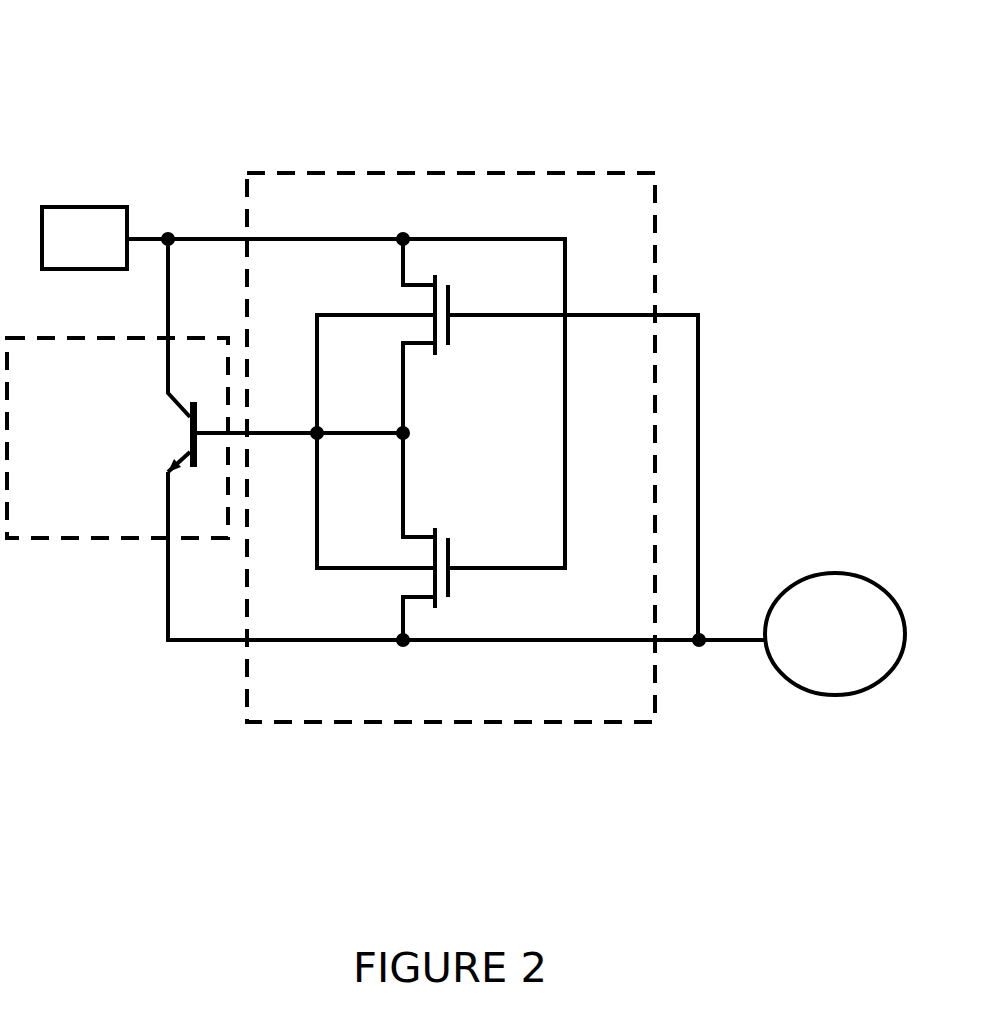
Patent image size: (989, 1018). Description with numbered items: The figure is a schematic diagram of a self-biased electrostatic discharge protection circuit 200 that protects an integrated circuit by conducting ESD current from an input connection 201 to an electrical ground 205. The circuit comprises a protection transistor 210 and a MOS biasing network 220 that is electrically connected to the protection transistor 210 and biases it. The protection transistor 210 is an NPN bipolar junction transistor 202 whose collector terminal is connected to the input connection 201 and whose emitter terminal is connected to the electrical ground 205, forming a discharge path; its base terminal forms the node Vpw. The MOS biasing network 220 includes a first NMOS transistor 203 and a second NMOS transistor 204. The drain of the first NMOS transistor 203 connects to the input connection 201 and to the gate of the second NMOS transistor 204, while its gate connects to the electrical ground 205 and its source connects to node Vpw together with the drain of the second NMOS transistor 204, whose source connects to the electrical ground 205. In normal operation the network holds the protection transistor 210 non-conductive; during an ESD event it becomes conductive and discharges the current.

The self-biased electrostatic discharge protection circuit 200 is at (62, 42).
The input connection 201 is at (102, 251).
The NPN bipolar junction transistor 202 is at (187, 432).
The first NMOS transistor 203 is at (450, 298).
The second NMOS transistor 204 is at (450, 582).
The electrical ground 205 is at (853, 654).
The protection transistor 210 is at (97, 538).
The MOS biasing network 220 is at (247, 665).